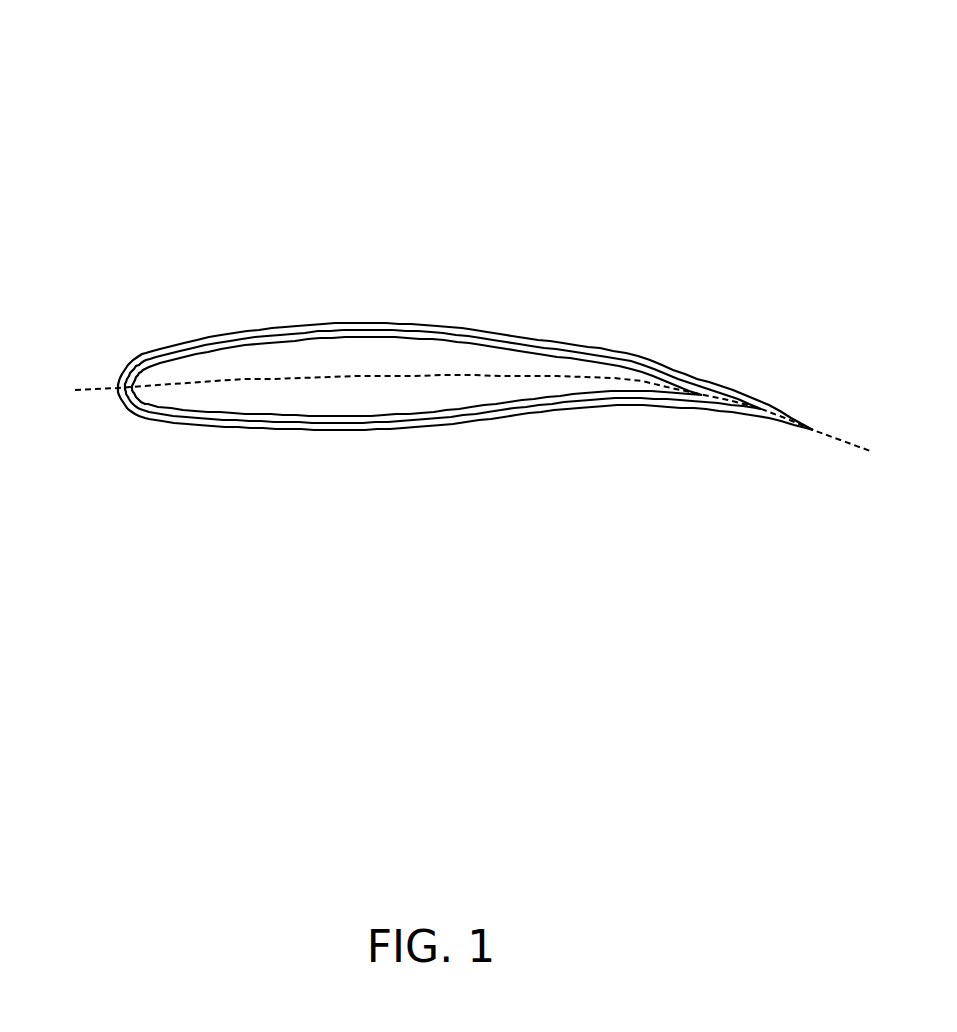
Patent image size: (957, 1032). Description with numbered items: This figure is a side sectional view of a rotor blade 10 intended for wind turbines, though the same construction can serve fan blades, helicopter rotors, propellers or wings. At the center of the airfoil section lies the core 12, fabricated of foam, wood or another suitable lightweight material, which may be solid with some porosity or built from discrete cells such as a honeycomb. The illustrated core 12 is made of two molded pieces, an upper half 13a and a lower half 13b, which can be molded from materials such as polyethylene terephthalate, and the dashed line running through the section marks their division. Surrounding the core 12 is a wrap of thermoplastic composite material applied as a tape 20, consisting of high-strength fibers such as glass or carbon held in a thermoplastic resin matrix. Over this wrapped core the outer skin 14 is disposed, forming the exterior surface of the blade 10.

The rotor blade 10 is at (471, 108).
The core 12 is at (365, 393).
The upper half 13a is at (527, 363).
The lower half 13b is at (513, 394).
The skin 14 is at (290, 325).
The tape 20 is at (188, 410).